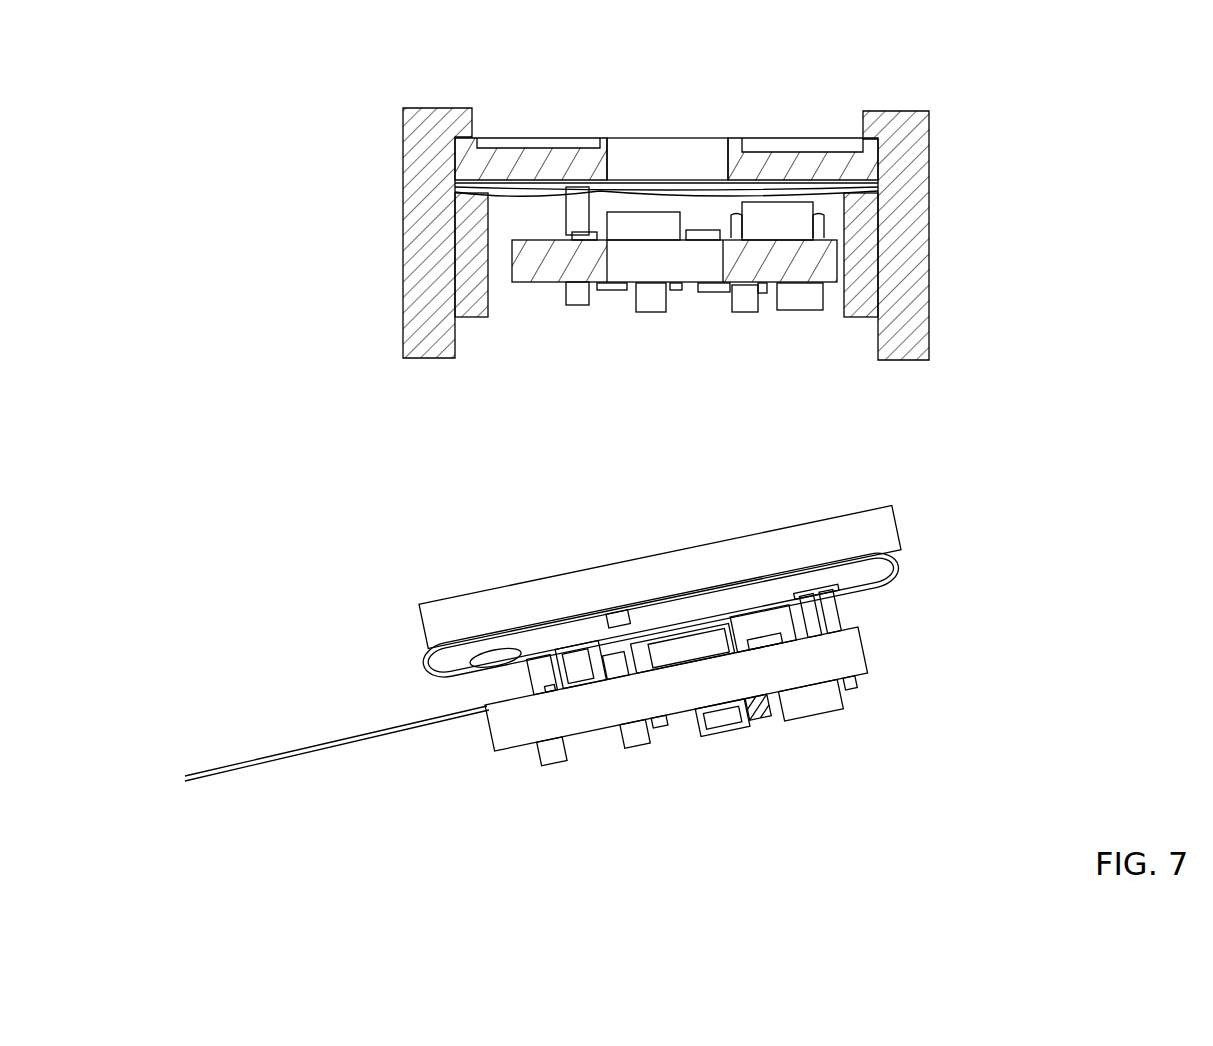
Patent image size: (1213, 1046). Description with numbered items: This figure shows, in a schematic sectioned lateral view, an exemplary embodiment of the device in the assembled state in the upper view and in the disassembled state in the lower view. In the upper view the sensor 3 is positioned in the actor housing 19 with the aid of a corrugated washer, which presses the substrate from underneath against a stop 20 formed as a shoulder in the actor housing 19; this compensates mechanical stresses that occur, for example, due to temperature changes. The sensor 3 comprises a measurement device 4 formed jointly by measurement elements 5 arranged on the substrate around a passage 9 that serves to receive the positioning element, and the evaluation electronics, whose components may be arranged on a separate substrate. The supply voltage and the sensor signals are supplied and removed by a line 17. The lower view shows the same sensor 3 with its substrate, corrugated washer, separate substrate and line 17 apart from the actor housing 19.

The sensor 3 is at (684, 207).
The measurement device 4 is at (530, 139).
The measurement element 5 is at (833, 146).
The passage 9 is at (680, 155).
The line 17 is at (268, 772).
The actor housing 19 is at (908, 257).
The stop 20 is at (905, 135).